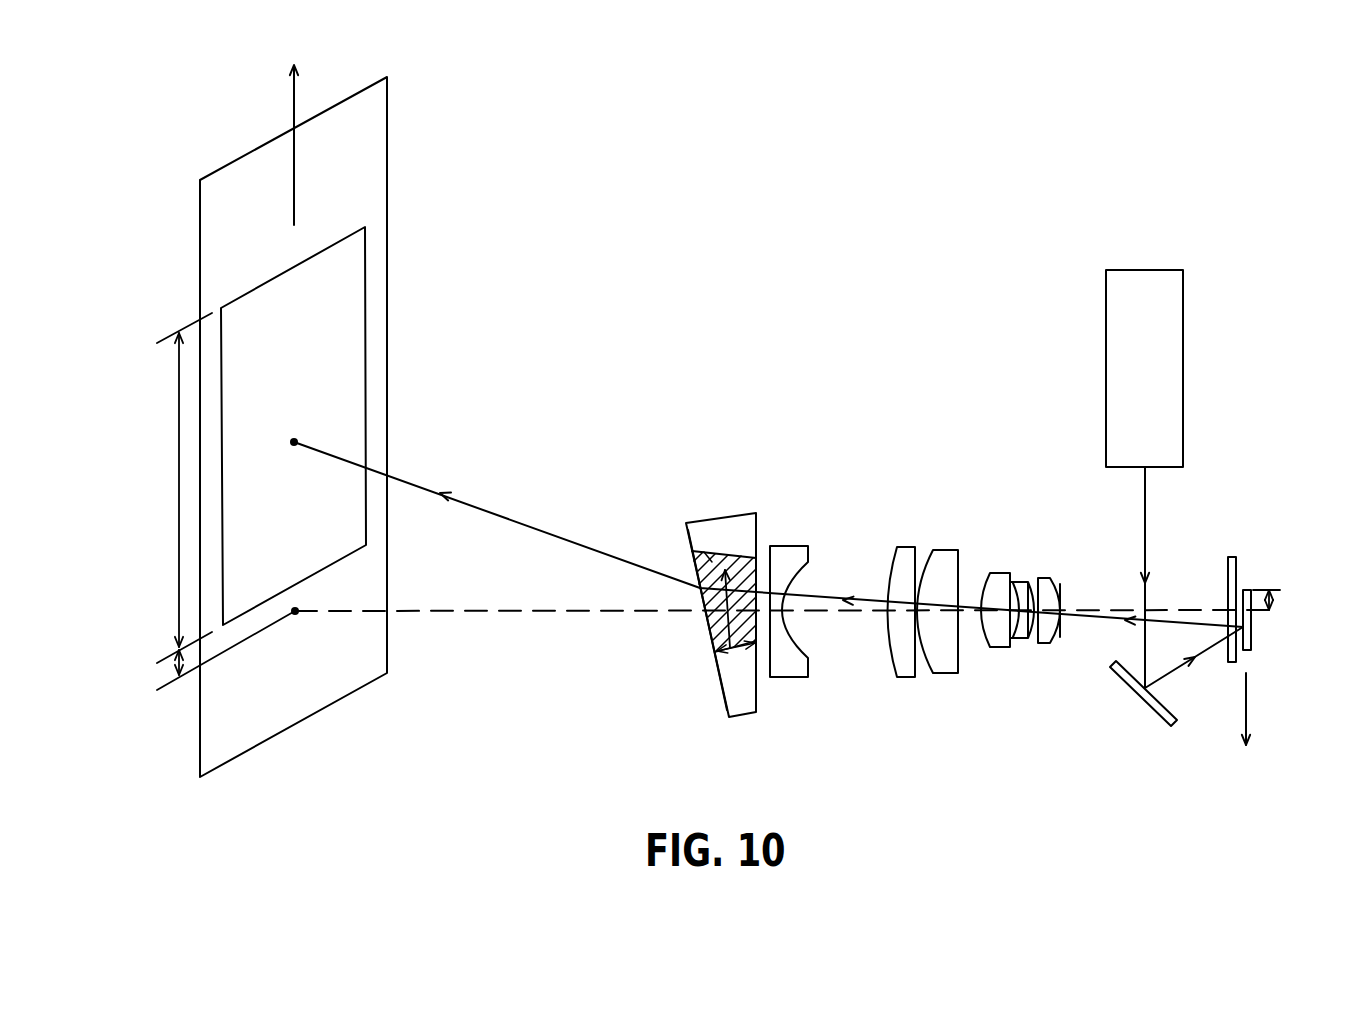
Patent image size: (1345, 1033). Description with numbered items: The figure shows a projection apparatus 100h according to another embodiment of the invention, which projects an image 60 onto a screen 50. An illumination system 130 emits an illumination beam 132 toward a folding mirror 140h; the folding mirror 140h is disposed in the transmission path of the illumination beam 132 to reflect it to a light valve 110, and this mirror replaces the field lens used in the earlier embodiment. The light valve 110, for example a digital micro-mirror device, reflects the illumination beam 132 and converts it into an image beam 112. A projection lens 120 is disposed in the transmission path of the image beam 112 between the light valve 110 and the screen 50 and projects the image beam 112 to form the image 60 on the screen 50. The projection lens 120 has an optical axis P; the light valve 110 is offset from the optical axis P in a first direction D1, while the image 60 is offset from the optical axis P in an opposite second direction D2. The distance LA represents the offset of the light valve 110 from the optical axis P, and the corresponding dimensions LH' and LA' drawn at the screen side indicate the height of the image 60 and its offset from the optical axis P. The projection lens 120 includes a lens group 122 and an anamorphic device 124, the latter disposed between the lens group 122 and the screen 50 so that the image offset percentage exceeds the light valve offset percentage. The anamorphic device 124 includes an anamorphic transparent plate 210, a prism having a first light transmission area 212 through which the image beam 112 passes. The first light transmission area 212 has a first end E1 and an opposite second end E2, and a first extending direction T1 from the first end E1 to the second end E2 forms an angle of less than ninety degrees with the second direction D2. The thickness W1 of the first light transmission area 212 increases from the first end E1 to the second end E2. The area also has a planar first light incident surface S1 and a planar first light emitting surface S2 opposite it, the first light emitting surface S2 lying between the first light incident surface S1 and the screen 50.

The screen 50 is at (230, 193).
The image 60 is at (350, 265).
The second direction D2 is at (294, 95).
The image height on screen LH' is at (177, 488).
The image offset distance on screen LA' is at (207, 657).
The optical axis P is at (531, 612).
The image beam 112 is at (1093, 622).
The illumination system 130 is at (1145, 270).
The illumination beam 132 is at (1145, 525).
The folding mirror 140h is at (1160, 713).
The light valve 110 is at (1250, 638).
The distance LA is at (1291, 598).
The first direction D1 is at (1260, 709).
The projection apparatus 100h is at (1282, 799).
The projection lens 120 is at (837, 627).
The lens group 122 is at (1063, 695).
The anamorphic device 124 is at (727, 601).
The anamorphic transparent plate 210 is at (725, 527).
The first light transmission area 212 is at (710, 555).
The first extending direction T1 is at (710, 558).
The second end E2 is at (732, 555).
The first end E1 is at (738, 655).
The first light incident surface S1 is at (757, 582).
The first light emitting surface S2 is at (708, 637).
The thickness W1 is at (717, 652).